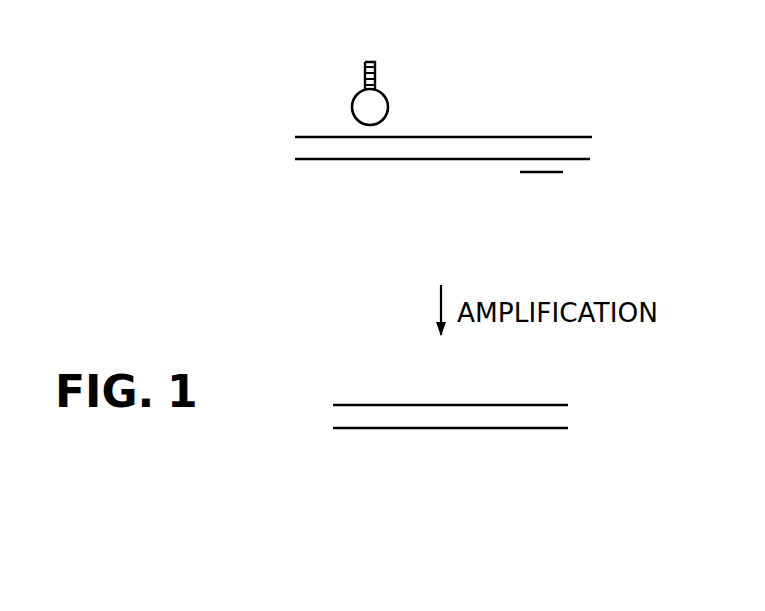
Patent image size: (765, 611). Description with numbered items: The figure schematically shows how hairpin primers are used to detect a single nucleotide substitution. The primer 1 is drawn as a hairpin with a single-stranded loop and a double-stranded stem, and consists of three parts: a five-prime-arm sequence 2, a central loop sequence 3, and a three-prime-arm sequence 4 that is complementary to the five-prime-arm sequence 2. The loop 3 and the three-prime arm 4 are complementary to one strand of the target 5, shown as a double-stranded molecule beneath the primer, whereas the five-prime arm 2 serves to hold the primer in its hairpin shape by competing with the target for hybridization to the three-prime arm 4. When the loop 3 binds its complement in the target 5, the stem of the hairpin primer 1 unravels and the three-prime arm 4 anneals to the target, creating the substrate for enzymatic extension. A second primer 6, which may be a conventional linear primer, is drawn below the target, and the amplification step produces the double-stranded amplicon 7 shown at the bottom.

The hairpin primer 1 is at (353, 65).
The 5'-arm sequence 2 is at (360, 73).
The central loop sequence 3 is at (388, 106).
The 3'-arm sequence 4 is at (377, 68).
The target 5 is at (482, 125).
The second primer 6 is at (515, 185).
The double-stranded amplicon 7 is at (393, 438).